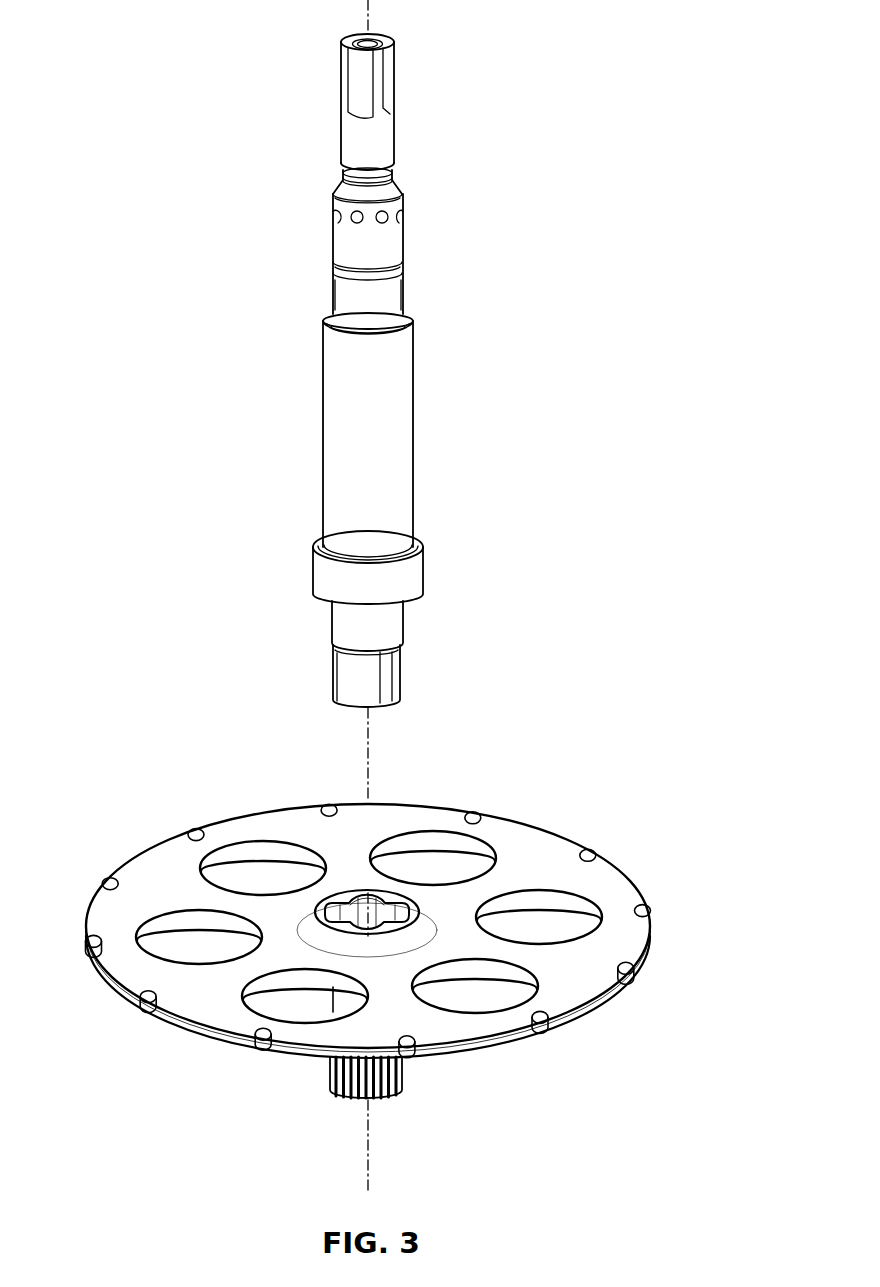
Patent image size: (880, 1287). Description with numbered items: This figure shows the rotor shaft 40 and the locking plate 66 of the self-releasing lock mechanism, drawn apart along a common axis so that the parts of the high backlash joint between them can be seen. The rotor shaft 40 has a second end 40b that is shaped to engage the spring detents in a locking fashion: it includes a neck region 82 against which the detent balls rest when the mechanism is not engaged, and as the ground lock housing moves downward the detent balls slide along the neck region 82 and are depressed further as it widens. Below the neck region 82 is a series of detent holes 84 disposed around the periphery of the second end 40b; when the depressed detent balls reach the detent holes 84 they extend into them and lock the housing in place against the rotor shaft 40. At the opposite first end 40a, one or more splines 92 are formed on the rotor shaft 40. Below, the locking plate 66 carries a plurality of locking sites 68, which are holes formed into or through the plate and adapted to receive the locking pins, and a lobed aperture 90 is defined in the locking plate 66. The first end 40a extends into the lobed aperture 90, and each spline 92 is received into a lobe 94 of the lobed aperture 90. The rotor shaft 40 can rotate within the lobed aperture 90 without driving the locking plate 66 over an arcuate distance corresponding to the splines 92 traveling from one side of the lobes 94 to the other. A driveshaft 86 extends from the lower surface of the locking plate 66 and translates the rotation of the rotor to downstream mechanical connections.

The rotor shaft 40 is at (431, 370).
The first end of the rotor shaft 40a is at (395, 621).
The second end of the rotor shaft 40b is at (392, 248).
The neck region 82 is at (396, 181).
The detent holes 84 is at (404, 211).
The splines 92 is at (384, 670).
The locking plate 66 is at (397, 939).
The locking sites 68 is at (640, 912).
The lobed aperture 90 is at (342, 898).
The lobe 94 is at (367, 930).
The driveshaft 86 is at (403, 1082).